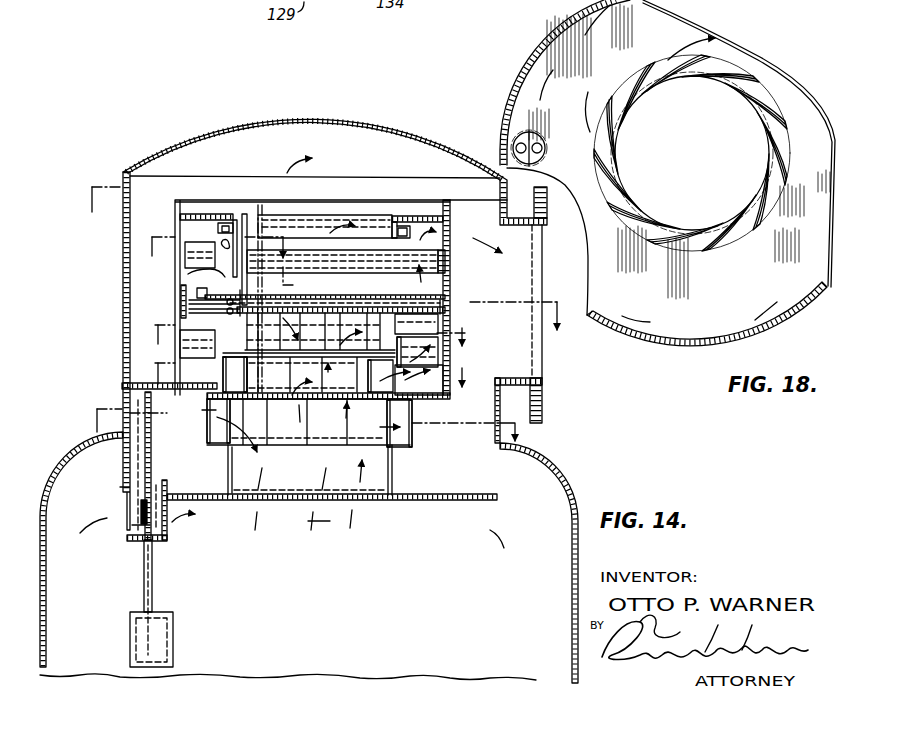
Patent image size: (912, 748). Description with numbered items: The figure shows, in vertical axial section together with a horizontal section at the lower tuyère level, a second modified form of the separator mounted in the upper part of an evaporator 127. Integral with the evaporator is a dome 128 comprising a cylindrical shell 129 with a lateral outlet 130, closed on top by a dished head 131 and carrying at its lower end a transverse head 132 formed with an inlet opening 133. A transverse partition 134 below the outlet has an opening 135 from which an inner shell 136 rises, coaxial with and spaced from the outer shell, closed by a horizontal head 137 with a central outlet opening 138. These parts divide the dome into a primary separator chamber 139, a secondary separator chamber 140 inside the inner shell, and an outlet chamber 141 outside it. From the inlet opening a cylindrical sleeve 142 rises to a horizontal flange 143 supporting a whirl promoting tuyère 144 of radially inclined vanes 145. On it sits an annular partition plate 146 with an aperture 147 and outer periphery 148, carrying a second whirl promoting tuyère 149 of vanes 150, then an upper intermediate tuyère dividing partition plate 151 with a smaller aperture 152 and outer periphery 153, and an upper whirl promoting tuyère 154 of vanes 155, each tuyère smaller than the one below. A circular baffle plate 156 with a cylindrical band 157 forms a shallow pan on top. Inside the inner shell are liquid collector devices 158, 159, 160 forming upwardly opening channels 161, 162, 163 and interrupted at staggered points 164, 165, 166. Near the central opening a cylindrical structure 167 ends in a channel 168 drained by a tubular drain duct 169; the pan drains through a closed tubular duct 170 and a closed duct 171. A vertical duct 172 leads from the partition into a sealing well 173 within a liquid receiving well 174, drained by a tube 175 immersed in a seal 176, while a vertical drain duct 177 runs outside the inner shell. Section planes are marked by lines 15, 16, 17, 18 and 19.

In FIG. 14, the evaporator 127 is at (581, 499).
In FIG. 14, the dome 128 is at (118, 165).
In FIG. 18, the dome 128 is at (551, 27).
In FIG. 14, the cylindrical shell 129 is at (122, 302).
In FIG. 18, the cylindrical shell 129 is at (653, 346).
In FIG. 14, the lateral outlet 130 is at (538, 342).
In FIG. 14, the dished head 131 is at (207, 136).
In FIG. 14, the transverse head 132 is at (453, 501).
In FIG. 18, the transverse head 132 is at (670, 30).
In FIG. 14, the inlet opening 133 is at (258, 498).
In FIG. 18, the inlet opening 133 is at (692, 153).
In FIG. 14, the transverse partition 134 is at (462, 416).
In FIG. 14, the opening 135 is at (455, 402).
In FIG. 14, the inner shell 136 is at (452, 238).
In FIG. 14, the horizontal head 137 is at (420, 212).
In FIG. 14, the central outlet opening 138 is at (330, 227).
In FIG. 14, the primary separator chamber 139 is at (332, 477).
In FIG. 18, the primary separator chamber 139 is at (771, 281).
In FIG. 14, the secondary separator chamber 140 is at (346, 273).
In FIG. 14, the outlet chamber 141 is at (319, 158).
In FIG. 14, the cylindrical sleeve 142 is at (392, 474).
In FIG. 18, the cylindrical sleeve 142 is at (669, 281).
In FIG. 14, the horizontal flange 143 is at (223, 445).
In FIG. 18, the horizontal flange 143 is at (766, 214).
In FIG. 14, the whirl promoting tuyère 144 is at (375, 426).
In FIG. 18, the whirl promoting tuyère 144 is at (740, 238).
In FIG. 14, the vanes 145 is at (255, 433).
In FIG. 18, the vanes 145 is at (780, 168).
In FIG. 14, the annular partition plate 146 is at (173, 408).
In FIG. 14, the aperture 147 is at (239, 421).
In FIG. 14, the outer periphery 148 is at (409, 429).
In FIG. 14, the second whirl promoting tuyère 149 is at (370, 376).
In FIG. 14, the vanes 150 is at (312, 376).
In FIG. 14, the upper intermediate tuyère dividing partition plate 151 is at (226, 366).
In FIG. 14, the aperture 152 is at (256, 370).
In FIG. 14, the outer periphery 153 is at (417, 350).
In FIG. 14, the upper whirl promoting tuyère 154 is at (337, 329).
In FIG. 14, the vanes 155 is at (276, 322).
In FIG. 14, the circular baffle plate 156 is at (337, 287).
In FIG. 14, the cylindrical band 157 is at (376, 307).
In FIG. 14, the liquid collector device 158 is at (443, 362).
In FIG. 14, the liquid collector device 159 is at (439, 321).
In FIG. 14, the liquid collector device 160 is at (445, 270).
In FIG. 14, the channel 161 is at (456, 341).
In FIG. 14, the channel 162 is at (447, 303).
In FIG. 14, the channel 163 is at (445, 252).
In FIG. 14, the interruption 164 is at (210, 365).
In FIG. 14, the interruption 165 is at (180, 297).
In FIG. 14, the interruption 166 is at (230, 244).
In FIG. 14, the cylindrical structure 167 is at (376, 226).
In FIG. 14, the channel 168 is at (412, 226).
In FIG. 14, the tubular drain duct 169 is at (227, 247).
In FIG. 14, the closed tubular duct 170 is at (203, 277).
In FIG. 14, the closed duct 171 is at (201, 319).
In FIG. 14, the vertical duct 172 is at (137, 456).
In FIG. 18, the vertical duct 172 is at (515, 138).
In FIG. 14, the sealing well 173 is at (133, 537).
In FIG. 14, the liquid receiving well 174 is at (157, 521).
In FIG. 14, the tube 175 is at (160, 582).
In FIG. 14, the seal 176 is at (174, 637).
In FIG. 14, the vertical drain duct 177 is at (236, 284).
In FIG. 14, the section line 15- 15 is at (324, 264).
In FIG. 14, the section line 16- 16 is at (310, 338).
In FIG. 14, the section line 17- 17 is at (307, 376).
In FIG. 14, the section line 18 is at (306, 428).
In FIG. 14, the section line 19- 19 is at (221, 261).